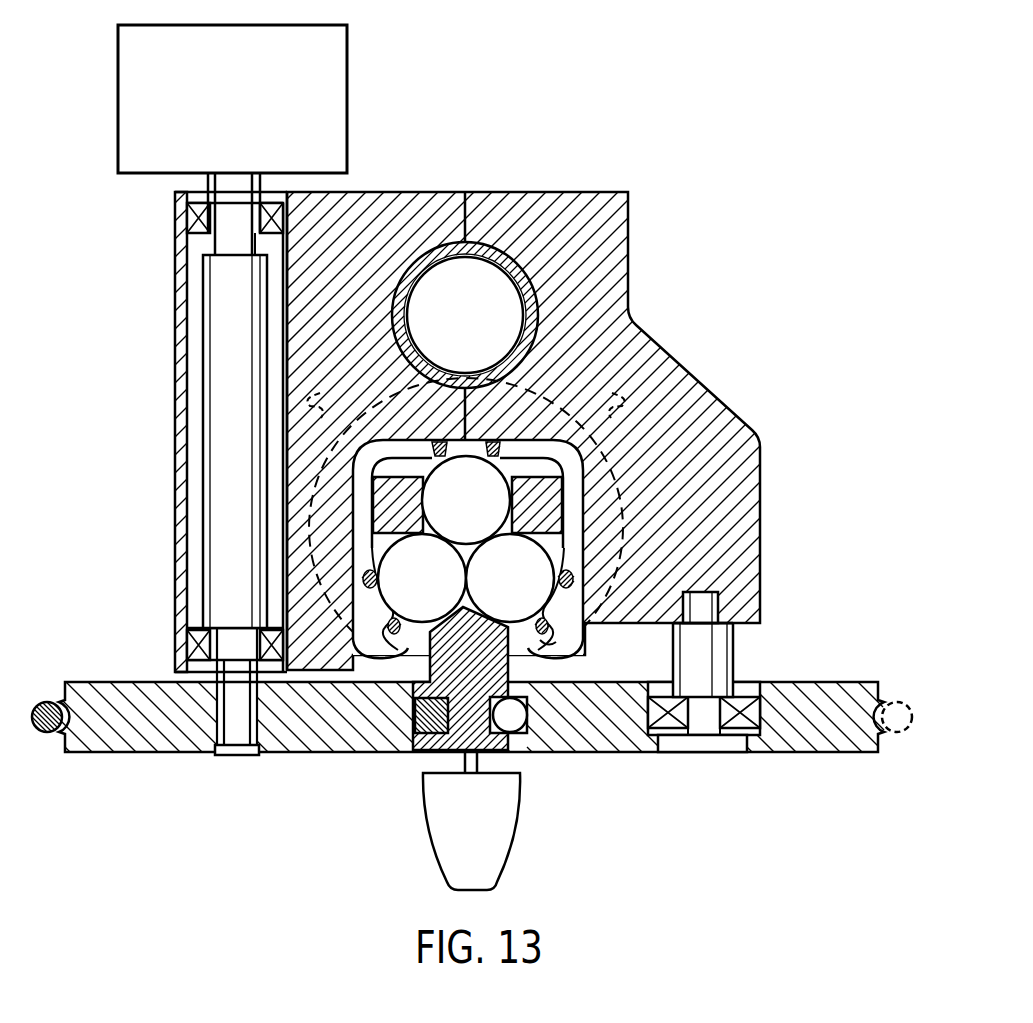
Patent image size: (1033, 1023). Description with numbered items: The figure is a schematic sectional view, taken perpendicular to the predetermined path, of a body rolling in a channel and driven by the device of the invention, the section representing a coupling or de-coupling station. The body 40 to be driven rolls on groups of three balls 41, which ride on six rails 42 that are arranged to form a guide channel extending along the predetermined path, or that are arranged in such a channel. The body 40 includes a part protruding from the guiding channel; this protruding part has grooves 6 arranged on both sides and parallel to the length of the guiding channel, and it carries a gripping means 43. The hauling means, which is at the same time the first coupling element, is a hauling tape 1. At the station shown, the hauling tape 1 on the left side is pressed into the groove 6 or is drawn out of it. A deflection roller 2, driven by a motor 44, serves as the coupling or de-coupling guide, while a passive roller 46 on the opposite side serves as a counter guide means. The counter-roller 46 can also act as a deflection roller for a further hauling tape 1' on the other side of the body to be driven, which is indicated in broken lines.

The hauling tape 1 is at (236, 718).
The further hauling tape 1' is at (903, 680).
The deflection roller 2 is at (164, 739).
The grooves 6 is at (513, 746).
The body to be driven 40 is at (406, 660).
The balls 41 is at (453, 505).
The rails 42 is at (560, 642).
The gripping means 43 is at (453, 843).
The motor 44 is at (348, 96).
The passive roller 46 is at (832, 731).